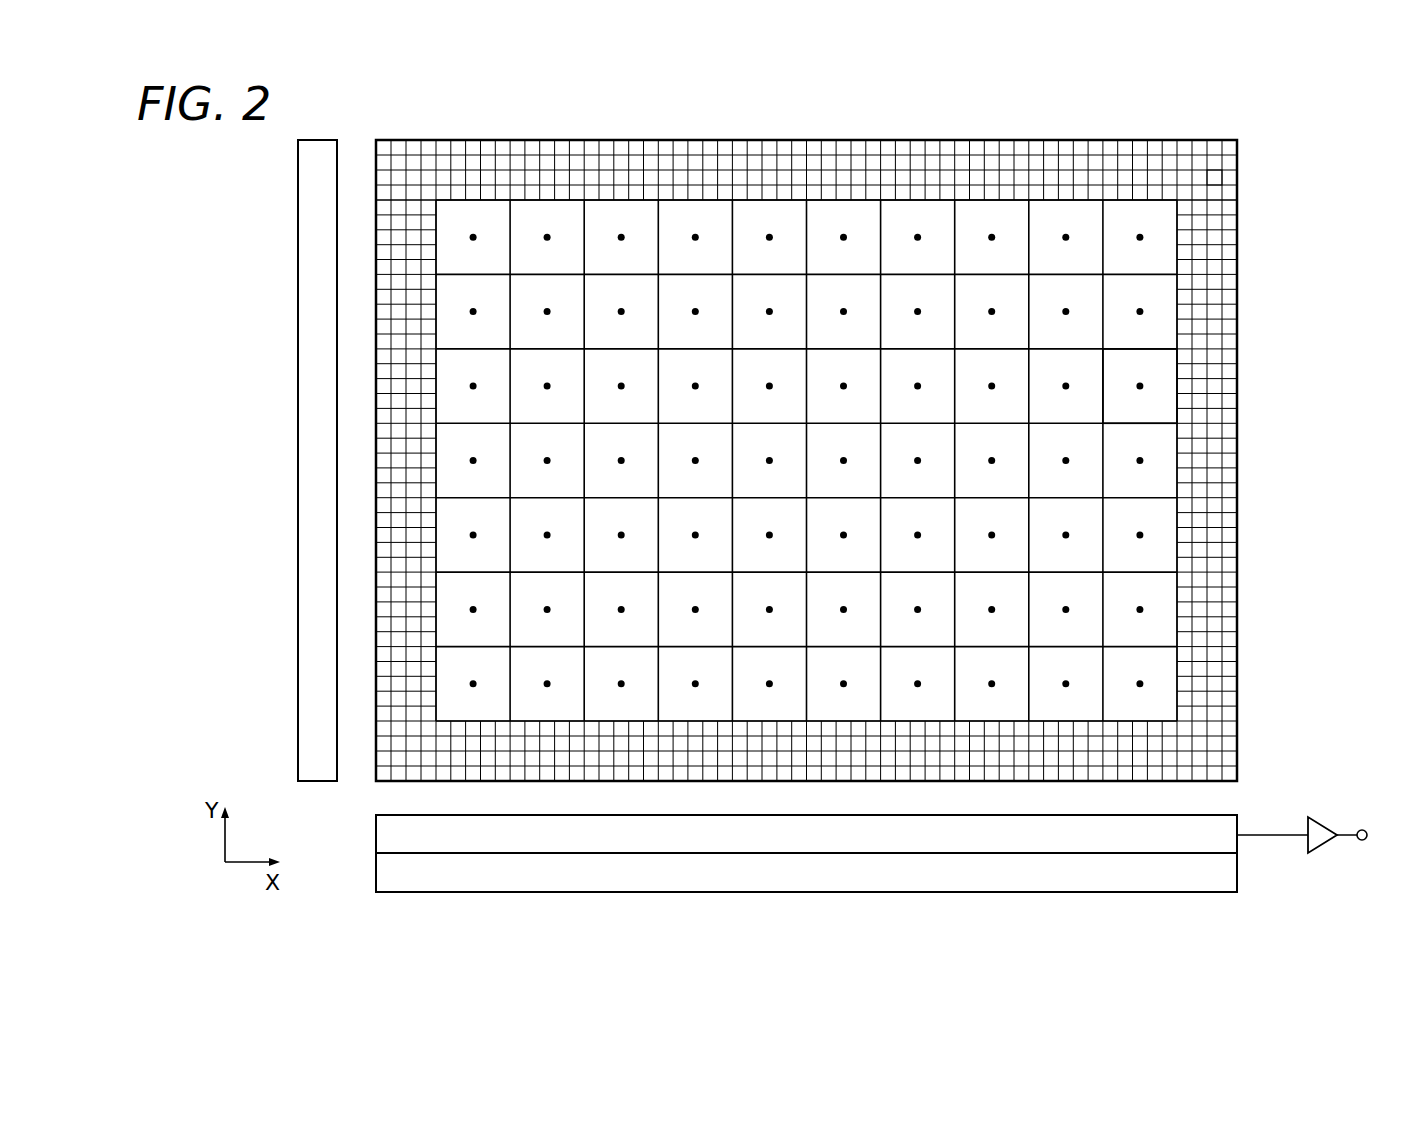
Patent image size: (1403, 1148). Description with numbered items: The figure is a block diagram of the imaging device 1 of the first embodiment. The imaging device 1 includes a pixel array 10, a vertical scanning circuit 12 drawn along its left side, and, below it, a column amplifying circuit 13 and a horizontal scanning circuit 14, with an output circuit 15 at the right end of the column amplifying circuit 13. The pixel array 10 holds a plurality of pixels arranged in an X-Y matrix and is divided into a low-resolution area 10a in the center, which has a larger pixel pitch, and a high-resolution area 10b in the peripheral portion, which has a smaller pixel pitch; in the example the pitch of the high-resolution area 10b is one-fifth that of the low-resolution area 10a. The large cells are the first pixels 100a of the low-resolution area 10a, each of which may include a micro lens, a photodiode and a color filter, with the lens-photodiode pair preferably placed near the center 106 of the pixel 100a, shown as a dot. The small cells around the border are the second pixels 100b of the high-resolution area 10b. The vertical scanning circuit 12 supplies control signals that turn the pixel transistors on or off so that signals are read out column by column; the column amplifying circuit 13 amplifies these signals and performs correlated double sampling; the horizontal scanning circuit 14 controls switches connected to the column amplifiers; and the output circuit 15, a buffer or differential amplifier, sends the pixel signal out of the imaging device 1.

The imaging device 1 is at (997, 120).
The pixel array 10 is at (1193, 140).
The low-resolution area 10a is at (1318, 206).
The high-resolution area 10b is at (1318, 140).
The first pixel 100a is at (1162, 400).
The second pixel 100b is at (1215, 180).
The center of the pixel 106 is at (1142, 384).
The vertical scanning circuit 12 is at (314, 140).
The column amplifying circuit 13 is at (1237, 826).
The horizontal scanning circuit 14 is at (1237, 876).
The output circuit 15 is at (1325, 845).